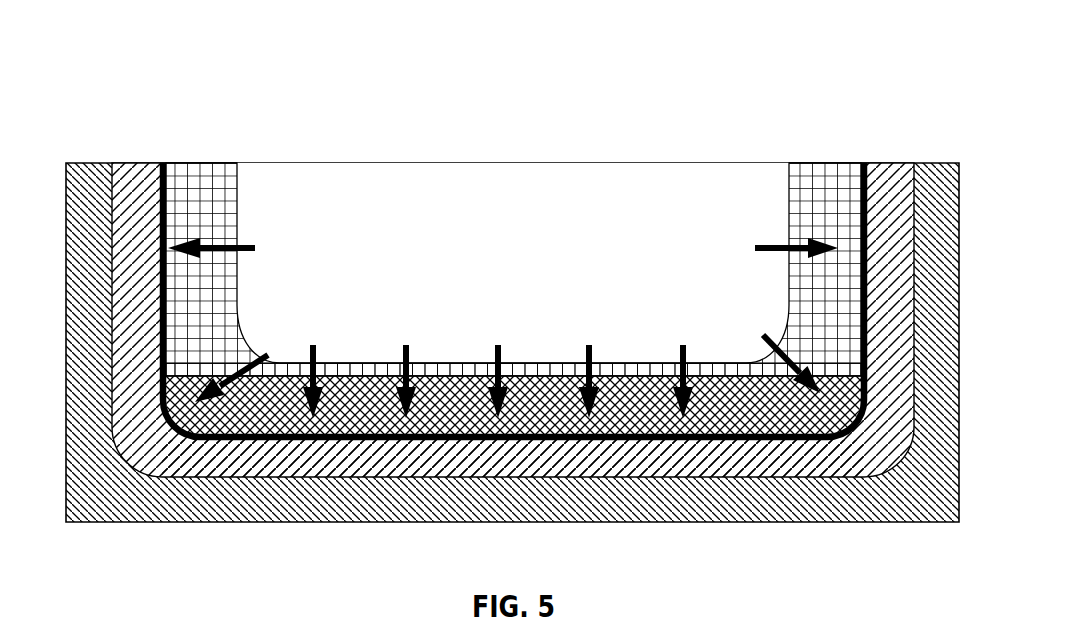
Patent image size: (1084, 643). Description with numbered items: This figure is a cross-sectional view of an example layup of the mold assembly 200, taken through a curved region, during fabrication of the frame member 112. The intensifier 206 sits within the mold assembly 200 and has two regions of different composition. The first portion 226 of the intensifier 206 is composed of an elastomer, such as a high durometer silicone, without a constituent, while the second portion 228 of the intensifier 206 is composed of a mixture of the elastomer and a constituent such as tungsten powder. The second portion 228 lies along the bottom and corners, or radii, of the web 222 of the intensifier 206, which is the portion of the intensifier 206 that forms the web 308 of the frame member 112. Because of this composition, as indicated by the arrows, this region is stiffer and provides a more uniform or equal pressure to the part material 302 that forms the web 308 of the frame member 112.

The mold assembly 200 is at (120, 29).
The frame member 112 is at (146, 163).
The part material 302 is at (146, 163).
The web 308 is at (640, 457).
The intensifier 206 is at (345, 365).
The web 222 is at (452, 365).
The second portion 228 is at (561, 395).
The first portion 226 is at (213, 230).